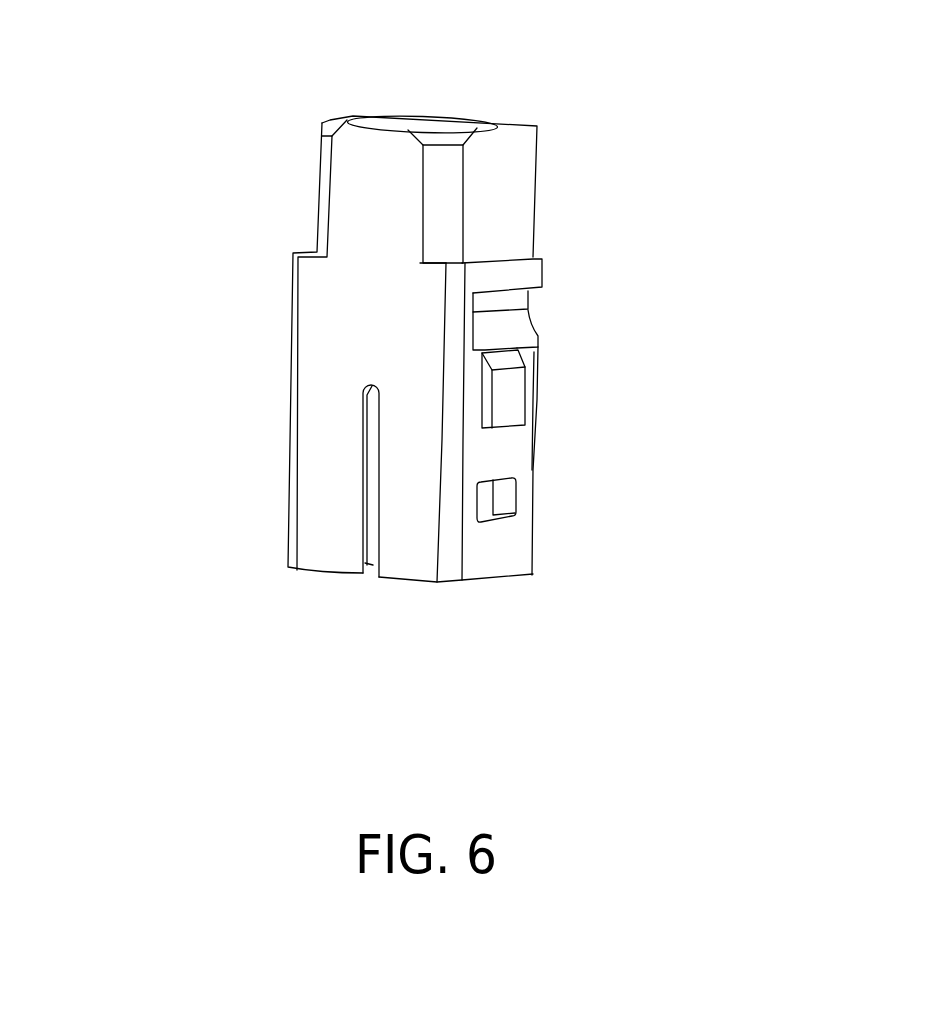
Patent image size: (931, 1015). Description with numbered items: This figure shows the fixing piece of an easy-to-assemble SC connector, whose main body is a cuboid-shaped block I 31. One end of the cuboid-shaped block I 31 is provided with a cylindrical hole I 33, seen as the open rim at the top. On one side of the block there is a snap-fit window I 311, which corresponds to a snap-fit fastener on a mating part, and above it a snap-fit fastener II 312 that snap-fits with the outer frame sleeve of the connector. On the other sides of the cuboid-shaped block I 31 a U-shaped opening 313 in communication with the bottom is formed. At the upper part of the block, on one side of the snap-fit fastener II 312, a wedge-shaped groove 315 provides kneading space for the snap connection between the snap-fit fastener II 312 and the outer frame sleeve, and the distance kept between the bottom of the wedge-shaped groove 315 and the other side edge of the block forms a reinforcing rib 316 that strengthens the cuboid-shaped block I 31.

The cuboid-shaped block I 31 is at (432, 474).
The cylindrical hole I 33 is at (435, 125).
The snap-fit window I 311 is at (505, 503).
The snap-fit fastener II 312 is at (517, 390).
The U-shaped opening 313 is at (373, 480).
The wedge-shaped groove 315 is at (502, 305).
The reinforcing rib 316 is at (470, 313).